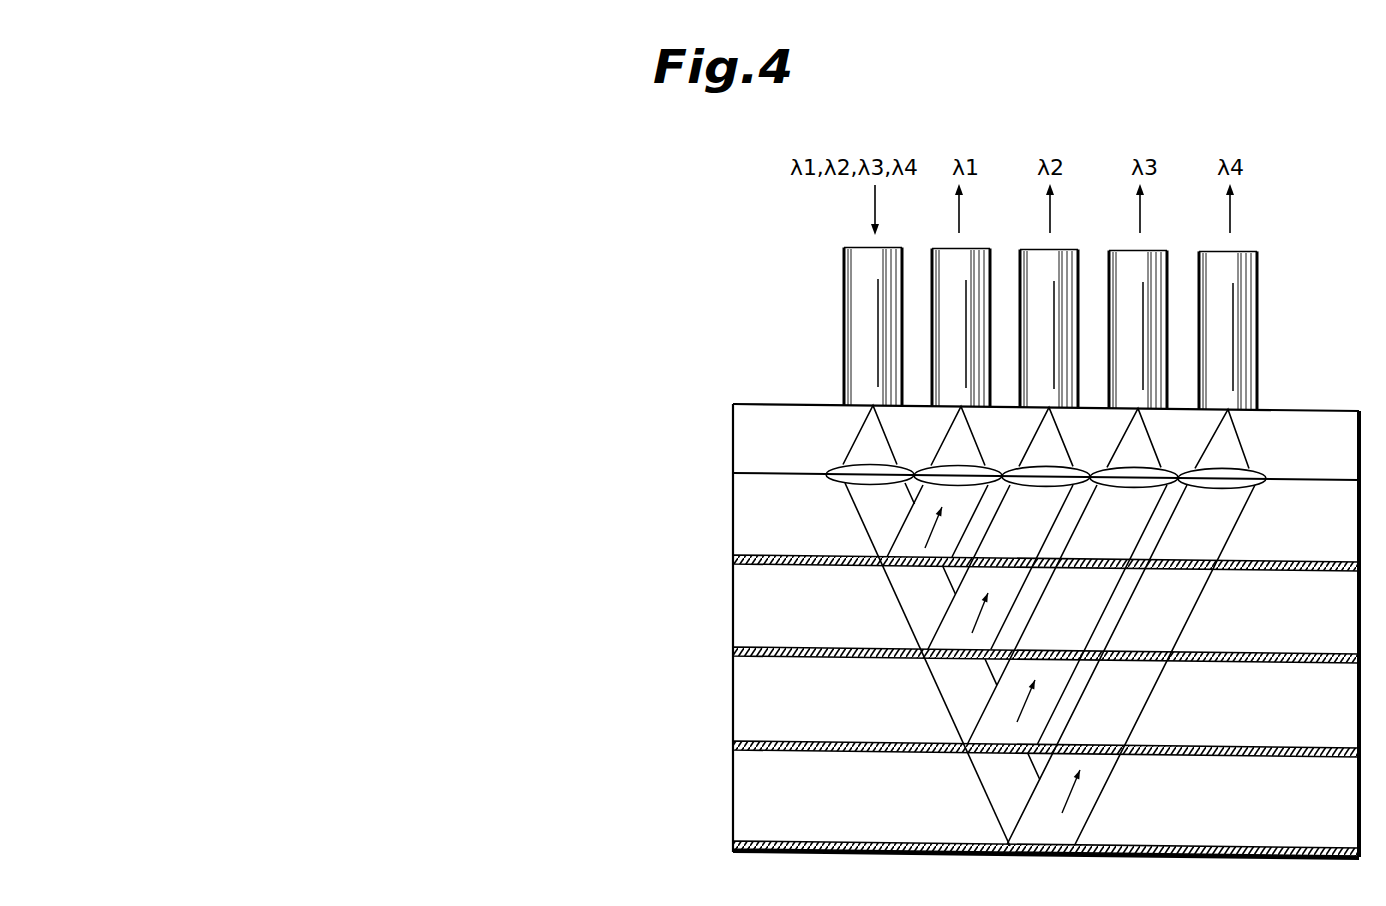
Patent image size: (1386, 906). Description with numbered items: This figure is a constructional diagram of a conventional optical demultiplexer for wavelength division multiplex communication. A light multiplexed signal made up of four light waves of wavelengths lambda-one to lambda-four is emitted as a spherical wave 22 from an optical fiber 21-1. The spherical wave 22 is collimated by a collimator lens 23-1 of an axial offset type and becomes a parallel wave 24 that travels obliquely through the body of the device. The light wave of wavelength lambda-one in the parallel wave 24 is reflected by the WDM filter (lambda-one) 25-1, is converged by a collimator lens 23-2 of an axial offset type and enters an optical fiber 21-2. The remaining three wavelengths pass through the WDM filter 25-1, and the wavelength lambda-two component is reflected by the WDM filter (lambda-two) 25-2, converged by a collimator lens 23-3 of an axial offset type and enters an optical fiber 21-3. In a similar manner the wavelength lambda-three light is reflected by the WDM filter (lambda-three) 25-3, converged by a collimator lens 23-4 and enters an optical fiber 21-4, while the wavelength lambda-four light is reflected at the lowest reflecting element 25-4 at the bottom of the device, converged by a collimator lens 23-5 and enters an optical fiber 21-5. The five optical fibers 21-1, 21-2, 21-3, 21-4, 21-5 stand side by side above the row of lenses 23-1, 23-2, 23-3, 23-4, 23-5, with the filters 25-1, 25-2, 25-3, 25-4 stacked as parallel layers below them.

The optical fiber 21-1 is at (863, 320).
The optical fiber 21-2 is at (965, 266).
The optical fiber 21-3 is at (1053, 262).
The optical fiber 21-4 is at (1146, 266).
The optical fiber 21-5 is at (1236, 264).
The spherical wave 22 is at (855, 442).
The collimator lens of axial offset type 23-1 is at (847, 473).
The collimator lens of axial offset type 23-2 is at (962, 476).
The collimator lens of axial offset type 23-3 is at (1050, 477).
The collimator lens 23-4 is at (1138, 478).
The collimator lens 23-5 is at (1227, 480).
The parallel wave 24 is at (857, 514).
The WDM filter (λ1) 25-1 is at (818, 566).
The WDM filter (λ2) 25-2 is at (820, 656).
The WDM filter (λ3) 25-3 is at (822, 750).
The WDM filter 25-4 is at (732, 845).